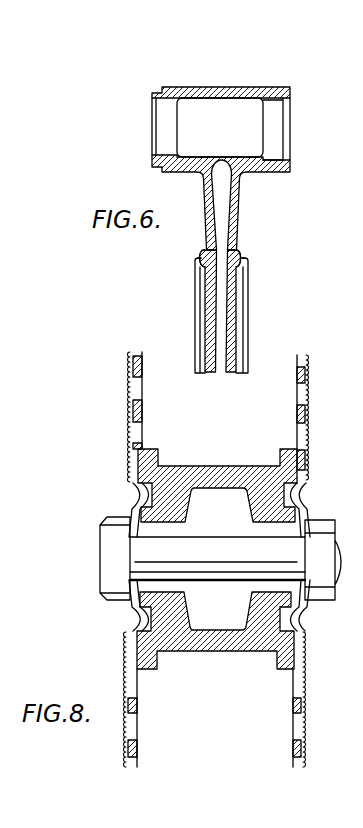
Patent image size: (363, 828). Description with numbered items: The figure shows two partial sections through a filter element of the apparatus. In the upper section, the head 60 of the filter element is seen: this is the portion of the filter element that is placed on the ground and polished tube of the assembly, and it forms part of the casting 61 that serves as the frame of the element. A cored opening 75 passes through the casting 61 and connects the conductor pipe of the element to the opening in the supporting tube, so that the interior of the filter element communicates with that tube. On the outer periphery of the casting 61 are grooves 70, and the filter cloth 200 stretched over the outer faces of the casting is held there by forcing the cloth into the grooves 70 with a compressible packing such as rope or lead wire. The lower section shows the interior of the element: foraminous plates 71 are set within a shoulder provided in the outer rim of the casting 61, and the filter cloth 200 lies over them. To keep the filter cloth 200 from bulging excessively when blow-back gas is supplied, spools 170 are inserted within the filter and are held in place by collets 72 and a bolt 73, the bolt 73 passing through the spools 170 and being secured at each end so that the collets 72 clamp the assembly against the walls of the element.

In FIG. 6, the head 60 is at (258, 86).
In FIG. 6, the casting 61 is at (245, 312).
In FIG. 6, the grooves 70 is at (201, 256).
In FIG. 8, the foraminous plates 71 is at (143, 409).
In FIG. 8, the collets 72 is at (128, 500).
In FIG. 8, the bolt 73 is at (105, 548).
In FIG. 6, the cored opening 75 is at (227, 220).
In FIG. 8, the spools 170 is at (211, 478).
In FIG. 8, the filter cloth 200 is at (131, 406).